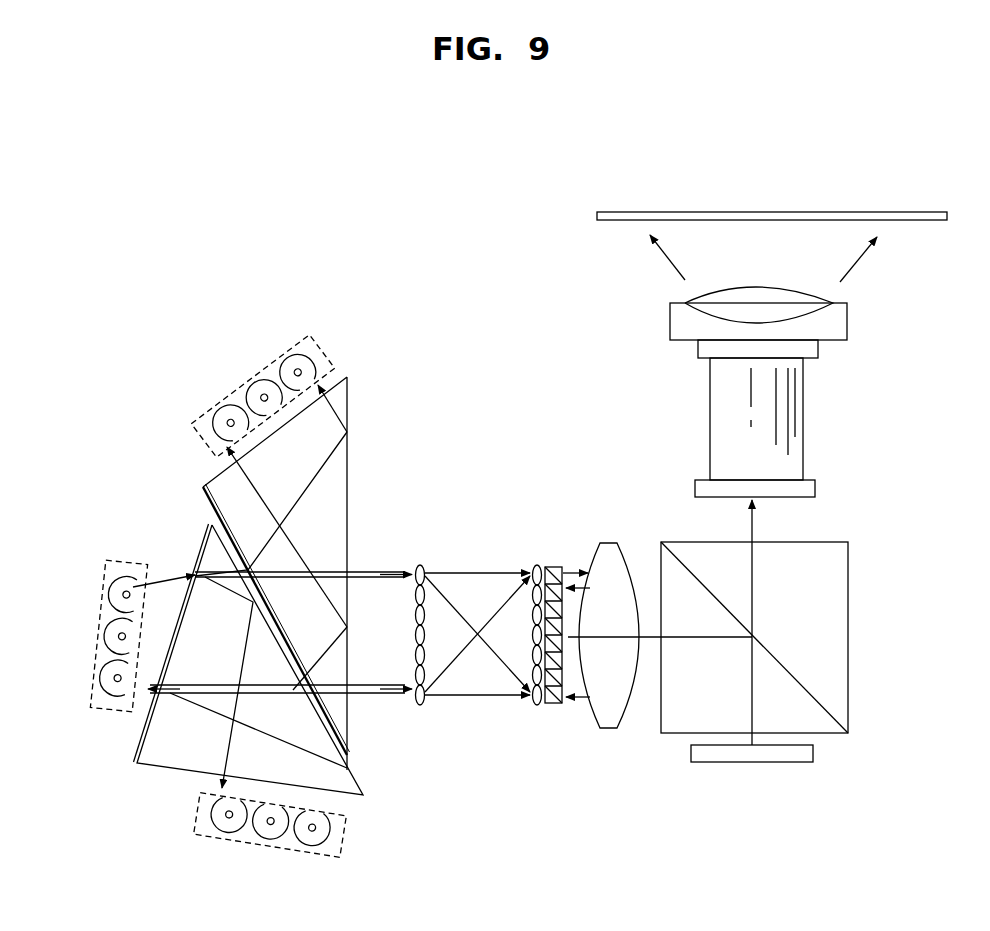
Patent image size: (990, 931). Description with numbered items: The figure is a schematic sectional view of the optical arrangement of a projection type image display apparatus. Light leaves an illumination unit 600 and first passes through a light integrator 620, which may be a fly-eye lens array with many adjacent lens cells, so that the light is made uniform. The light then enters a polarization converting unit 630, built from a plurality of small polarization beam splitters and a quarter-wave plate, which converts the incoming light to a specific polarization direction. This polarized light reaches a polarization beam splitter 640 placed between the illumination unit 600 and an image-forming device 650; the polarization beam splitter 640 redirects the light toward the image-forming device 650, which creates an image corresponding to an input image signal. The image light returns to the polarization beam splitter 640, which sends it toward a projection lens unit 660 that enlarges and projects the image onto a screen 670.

The illumination unit 600 is at (351, 332).
The light integrator 620 is at (418, 720).
The polarization converting unit 630 is at (552, 705).
The polarization beam splitter 640 is at (856, 612).
The image-forming device 650 is at (813, 753).
The projection lens unit 660 is at (870, 323).
The screen 670 is at (907, 212).